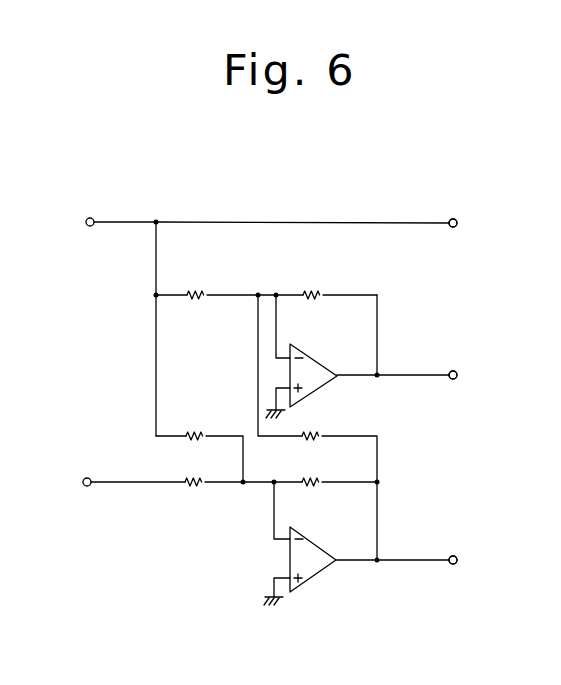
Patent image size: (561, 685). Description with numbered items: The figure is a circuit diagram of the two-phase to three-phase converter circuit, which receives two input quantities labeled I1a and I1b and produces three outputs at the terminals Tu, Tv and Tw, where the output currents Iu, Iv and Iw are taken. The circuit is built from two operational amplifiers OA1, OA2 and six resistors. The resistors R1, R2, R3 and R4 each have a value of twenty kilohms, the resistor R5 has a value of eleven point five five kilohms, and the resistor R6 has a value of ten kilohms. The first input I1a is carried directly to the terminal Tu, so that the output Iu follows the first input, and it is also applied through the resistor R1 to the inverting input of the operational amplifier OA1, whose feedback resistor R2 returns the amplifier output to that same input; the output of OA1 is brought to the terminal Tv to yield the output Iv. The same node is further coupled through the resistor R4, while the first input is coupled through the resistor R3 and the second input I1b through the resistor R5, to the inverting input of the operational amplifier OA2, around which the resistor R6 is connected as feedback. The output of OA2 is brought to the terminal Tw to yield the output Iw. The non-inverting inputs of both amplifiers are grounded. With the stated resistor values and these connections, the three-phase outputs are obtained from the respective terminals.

The input current terminal I1a is at (99, 219).
The input current terminal I1b is at (113, 479).
The terminal Tu is at (306, 211).
The terminal Tv is at (397, 364).
The terminal Tw is at (396, 548).
The output current Iu is at (469, 222).
The output current Iv is at (468, 374).
The output current Iw is at (470, 561).
The resistor R1 is at (215, 295).
The resistor R2 is at (326, 319).
The resistor R3 is at (199, 443).
The resistor R4 is at (317, 388).
The resistor R5 is at (209, 483).
The resistor R6 is at (325, 506).
The operational amplifier OA1 is at (310, 359).
The operational amplifier OA2 is at (310, 543).